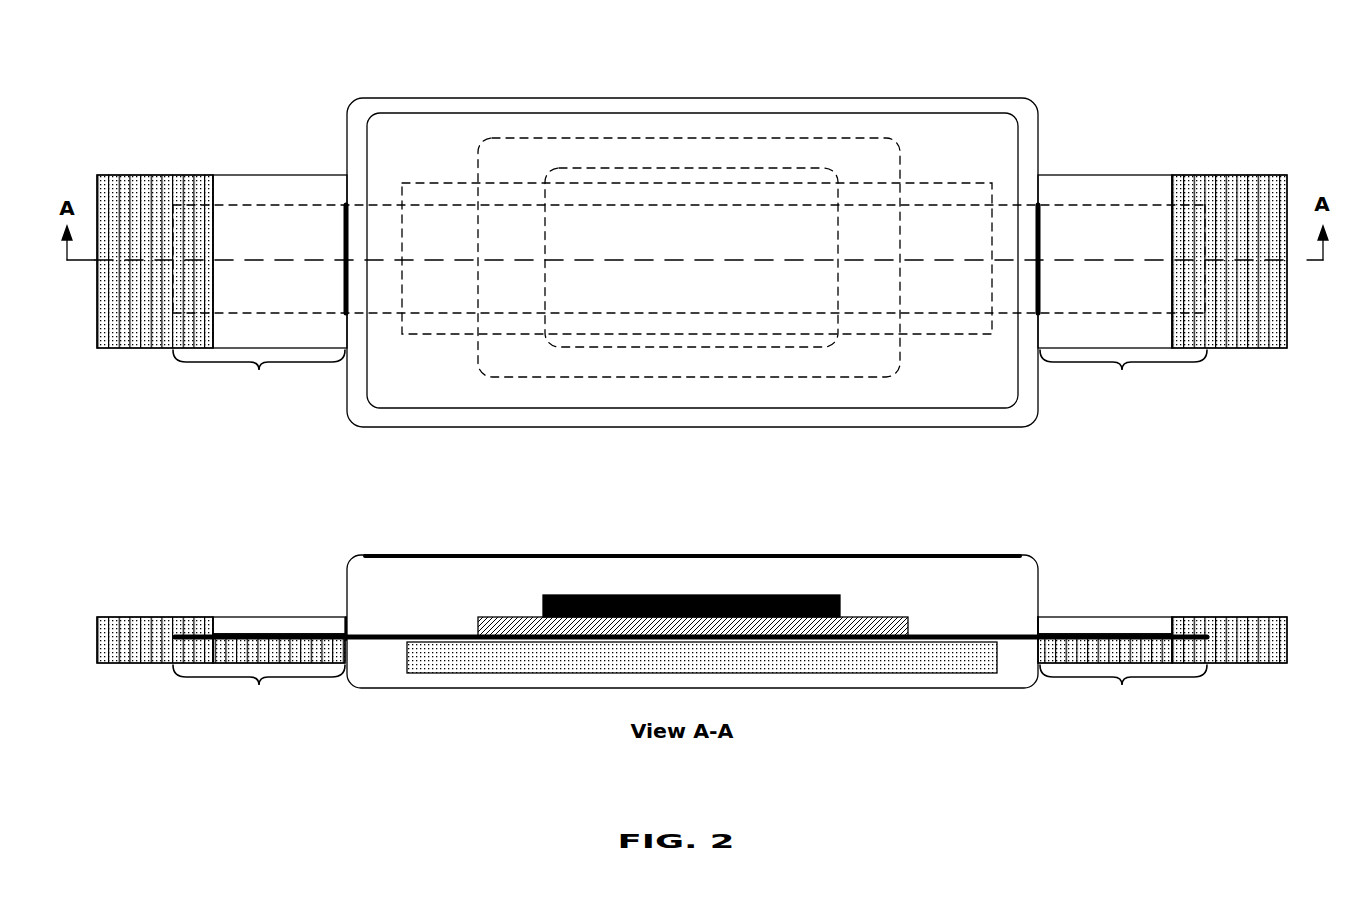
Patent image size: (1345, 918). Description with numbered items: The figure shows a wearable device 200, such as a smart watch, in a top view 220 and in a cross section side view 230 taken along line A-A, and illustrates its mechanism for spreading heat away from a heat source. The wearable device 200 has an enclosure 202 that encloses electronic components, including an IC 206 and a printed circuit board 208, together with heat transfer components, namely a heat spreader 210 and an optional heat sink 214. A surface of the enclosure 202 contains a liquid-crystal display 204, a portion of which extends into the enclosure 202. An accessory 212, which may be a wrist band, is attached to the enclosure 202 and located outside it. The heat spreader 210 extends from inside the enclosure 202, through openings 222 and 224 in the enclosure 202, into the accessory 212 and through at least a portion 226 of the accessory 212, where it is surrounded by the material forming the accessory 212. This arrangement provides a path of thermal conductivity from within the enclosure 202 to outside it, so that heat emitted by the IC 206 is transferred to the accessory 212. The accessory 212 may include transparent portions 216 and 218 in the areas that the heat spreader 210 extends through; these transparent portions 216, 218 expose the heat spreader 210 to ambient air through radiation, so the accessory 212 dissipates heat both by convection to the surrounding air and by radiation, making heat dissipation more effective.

The wearable device 200 is at (156, 68).
The enclosure 202 is at (1039, 107).
The liquid-crystal display 204 is at (918, 112).
The IC 206 is at (838, 174).
The printed circuit board 208 is at (902, 165).
The heat spreader 210 is at (246, 212).
The accessory 212 is at (149, 174).
The heat sink 214 is at (935, 336).
The transparent portion 216 is at (232, 174).
The transparent portion 218 is at (1158, 174).
The top view 220 is at (670, 82).
The opening 222 is at (345, 207).
The opening 224 is at (1040, 232).
The portion of the accessory 226 is at (690, 532).
The cross section side view 230 is at (675, 528).